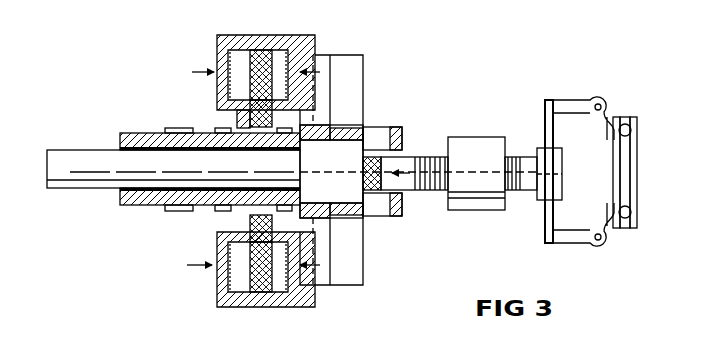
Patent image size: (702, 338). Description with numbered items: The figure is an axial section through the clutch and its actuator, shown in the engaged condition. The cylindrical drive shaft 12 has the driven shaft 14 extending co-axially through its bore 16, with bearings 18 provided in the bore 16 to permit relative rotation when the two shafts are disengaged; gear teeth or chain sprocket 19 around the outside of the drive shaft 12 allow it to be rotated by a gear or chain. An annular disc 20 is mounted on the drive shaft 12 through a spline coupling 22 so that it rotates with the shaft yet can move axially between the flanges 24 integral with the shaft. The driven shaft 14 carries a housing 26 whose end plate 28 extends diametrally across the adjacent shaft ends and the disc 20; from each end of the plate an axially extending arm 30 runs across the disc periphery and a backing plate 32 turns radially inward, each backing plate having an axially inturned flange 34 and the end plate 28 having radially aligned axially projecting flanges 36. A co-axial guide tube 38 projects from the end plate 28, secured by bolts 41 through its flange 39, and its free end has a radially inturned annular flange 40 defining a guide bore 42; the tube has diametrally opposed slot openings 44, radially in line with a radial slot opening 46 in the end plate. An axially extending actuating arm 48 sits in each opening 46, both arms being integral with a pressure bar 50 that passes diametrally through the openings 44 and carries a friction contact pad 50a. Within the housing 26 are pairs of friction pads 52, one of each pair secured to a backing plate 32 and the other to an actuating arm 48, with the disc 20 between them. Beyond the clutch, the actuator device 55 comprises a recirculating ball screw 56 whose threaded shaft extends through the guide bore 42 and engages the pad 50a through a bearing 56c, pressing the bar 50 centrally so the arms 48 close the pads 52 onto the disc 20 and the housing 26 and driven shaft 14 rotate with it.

The drive shaft 12 is at (138, 135).
The driven shaft 14 is at (78, 168).
The bore 16 is at (170, 150).
The bearings 18 is at (137, 207).
The gear teeth or chain sprocket 19 is at (180, 128).
The annular disc 20 is at (255, 306).
The spline coupling 22 is at (240, 118).
The flanges 24 is at (220, 251).
The housing 26 is at (238, 31).
The end plate 28 is at (370, 260).
The axially extending arm 30 is at (300, 307).
The arms or backing means 32 is at (220, 272).
The axially inturned flange 34 is at (220, 238).
The axially projecting flanges 36 is at (266, 50).
The guide tube 38 is at (392, 127).
The flange 39 is at (335, 270).
The radially inturned annular flange 40 is at (402, 148).
The bolts 41 is at (337, 113).
The guide bore 42 is at (447, 163).
The openings 44 is at (397, 222).
The opening 46 is at (315, 56).
The actuating arm 48 is at (318, 66).
The pressure bar 50 is at (352, 229).
The contact pad 50a is at (385, 205).
The friction pads 52 is at (220, 286).
The actuator device 55 is at (580, 76).
The recirculating ball screw 56 is at (403, 157).
The bearing 56c is at (437, 195).